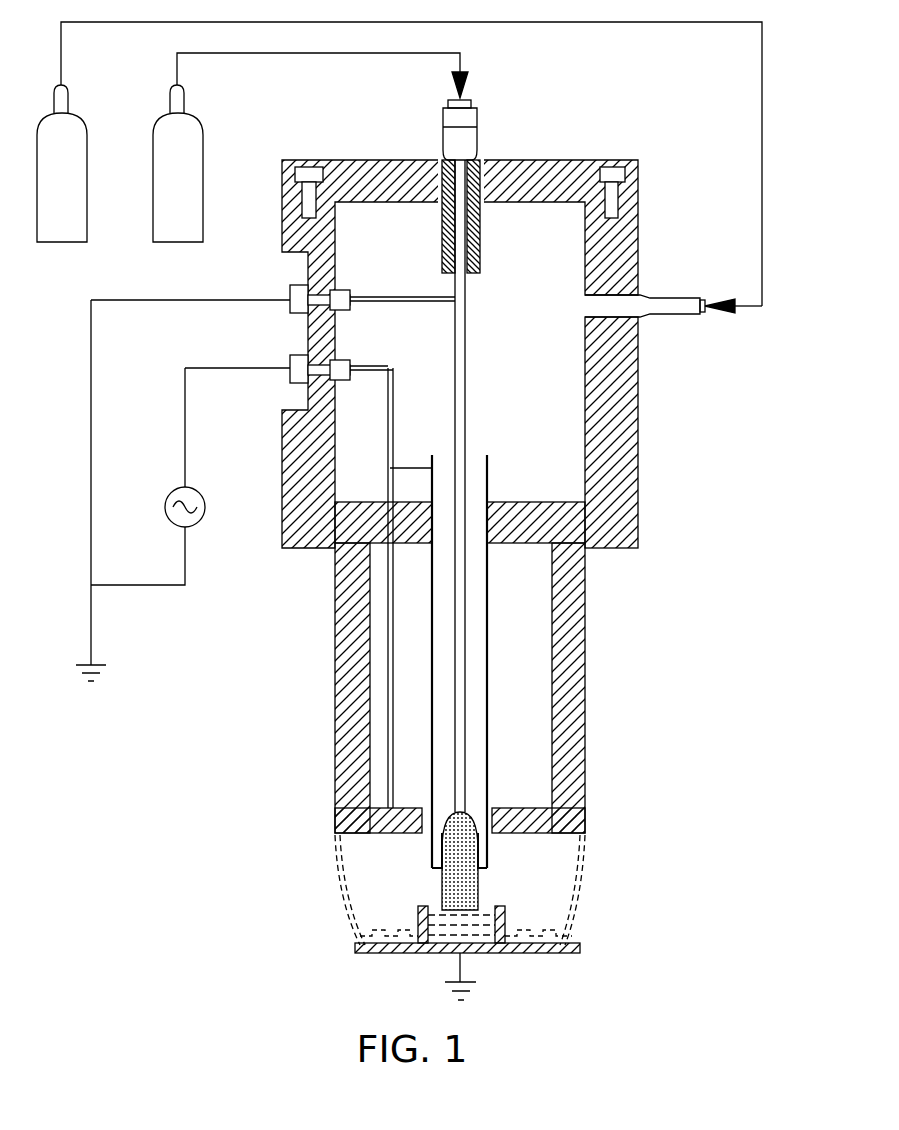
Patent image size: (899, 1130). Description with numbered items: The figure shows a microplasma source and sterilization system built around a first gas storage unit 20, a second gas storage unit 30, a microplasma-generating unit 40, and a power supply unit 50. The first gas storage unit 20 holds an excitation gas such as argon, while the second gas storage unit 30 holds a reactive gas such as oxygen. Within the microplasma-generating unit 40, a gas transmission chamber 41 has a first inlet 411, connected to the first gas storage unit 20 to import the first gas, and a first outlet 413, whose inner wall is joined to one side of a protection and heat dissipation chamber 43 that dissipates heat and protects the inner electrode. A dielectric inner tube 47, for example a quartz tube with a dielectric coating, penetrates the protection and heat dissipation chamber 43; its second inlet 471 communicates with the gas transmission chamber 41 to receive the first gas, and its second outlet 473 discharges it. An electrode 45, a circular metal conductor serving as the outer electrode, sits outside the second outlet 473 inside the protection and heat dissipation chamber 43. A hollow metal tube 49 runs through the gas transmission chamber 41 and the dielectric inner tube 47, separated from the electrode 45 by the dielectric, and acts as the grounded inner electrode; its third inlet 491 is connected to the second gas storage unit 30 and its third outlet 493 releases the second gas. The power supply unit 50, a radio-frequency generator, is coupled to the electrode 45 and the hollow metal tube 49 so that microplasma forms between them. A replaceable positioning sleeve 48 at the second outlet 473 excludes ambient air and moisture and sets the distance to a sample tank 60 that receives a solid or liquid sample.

The first gas storage unit 20 is at (61, 242).
The second gas storage unit 30 is at (177, 242).
The microplasma-generating unit 40 is at (442, 522).
The gas transmission chamber 41 is at (620, 417).
The first inlet 411 is at (668, 295).
The first outlet 413 is at (583, 525).
The protection and heat dissipation chamber 43 is at (570, 702).
The electrode 45 is at (560, 815).
The dielectric inner tube 47 is at (432, 662).
The second inlet 471 is at (432, 468).
The second outlet 473 is at (490, 862).
The positioning sleeve 48 is at (575, 905).
The hollow metal tube 49 is at (455, 705).
The third inlet 491 is at (470, 165).
The third outlet 493 is at (455, 810).
The power supply unit 50 is at (205, 505).
The sample tank 60 is at (503, 953).